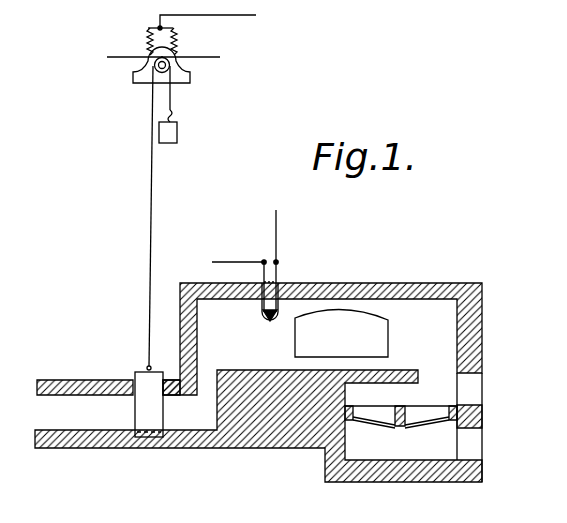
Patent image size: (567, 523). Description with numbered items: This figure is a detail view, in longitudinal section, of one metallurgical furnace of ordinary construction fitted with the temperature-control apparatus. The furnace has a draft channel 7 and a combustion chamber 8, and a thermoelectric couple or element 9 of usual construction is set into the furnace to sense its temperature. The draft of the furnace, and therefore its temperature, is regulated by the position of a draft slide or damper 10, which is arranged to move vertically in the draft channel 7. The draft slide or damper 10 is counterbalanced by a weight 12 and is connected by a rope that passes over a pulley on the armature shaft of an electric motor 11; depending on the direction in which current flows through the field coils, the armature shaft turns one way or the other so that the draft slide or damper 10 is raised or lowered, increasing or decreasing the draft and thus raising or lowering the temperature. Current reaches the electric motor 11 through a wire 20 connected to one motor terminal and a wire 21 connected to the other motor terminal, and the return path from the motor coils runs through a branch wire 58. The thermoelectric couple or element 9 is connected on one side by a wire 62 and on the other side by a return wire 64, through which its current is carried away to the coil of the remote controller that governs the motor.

The draft channel 7 is at (102, 417).
The combustion chamber 8 is at (423, 407).
The thermoelectric couple or element 9 is at (262, 306).
The draft slide or damper 10 is at (147, 380).
The electric motor 11 is at (145, 77).
The weight 12 is at (178, 133).
The wire 20 is at (114, 57).
The wire 21 is at (217, 57).
The branch wire 58 is at (215, 15).
The wire 62 is at (251, 257).
The return wire 64 is at (278, 233).